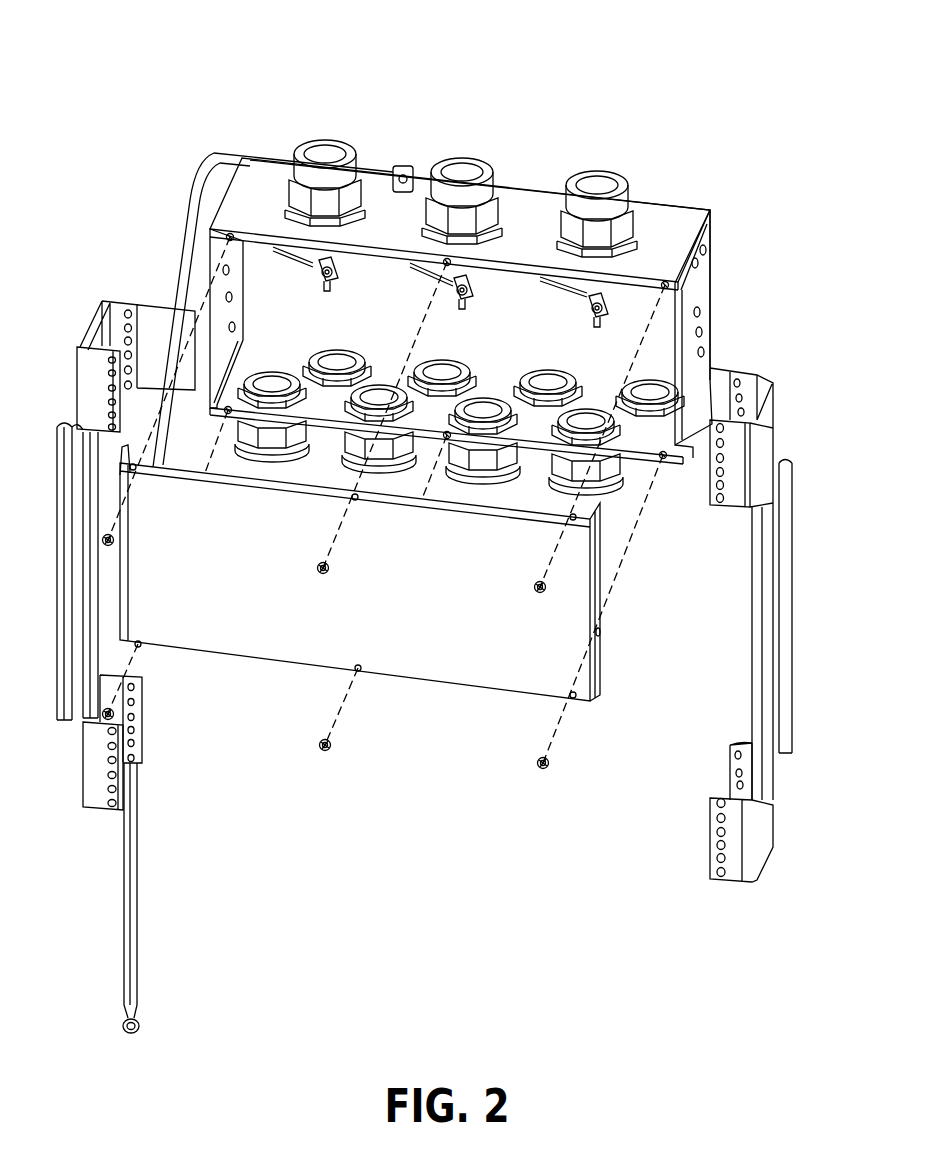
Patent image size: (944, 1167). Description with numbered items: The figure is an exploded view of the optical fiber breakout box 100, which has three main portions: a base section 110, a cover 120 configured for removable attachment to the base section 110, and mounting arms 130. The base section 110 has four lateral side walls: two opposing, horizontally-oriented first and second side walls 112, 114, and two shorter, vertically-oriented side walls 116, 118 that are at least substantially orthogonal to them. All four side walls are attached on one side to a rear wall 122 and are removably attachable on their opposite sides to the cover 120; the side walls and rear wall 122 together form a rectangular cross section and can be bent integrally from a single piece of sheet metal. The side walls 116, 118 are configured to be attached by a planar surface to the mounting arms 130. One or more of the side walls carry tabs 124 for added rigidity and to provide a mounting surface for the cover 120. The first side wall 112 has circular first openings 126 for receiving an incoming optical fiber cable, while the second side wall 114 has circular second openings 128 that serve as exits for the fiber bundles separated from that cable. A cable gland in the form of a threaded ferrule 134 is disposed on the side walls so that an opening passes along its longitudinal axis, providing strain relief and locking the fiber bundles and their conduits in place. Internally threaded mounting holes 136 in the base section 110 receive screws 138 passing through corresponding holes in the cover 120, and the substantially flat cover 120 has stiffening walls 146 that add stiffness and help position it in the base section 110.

The breakout box 100 is at (236, 48).
The base section 110 is at (728, 172).
The first side wall 112 is at (654, 210).
The second side wall 114 is at (650, 440).
The side wall 116 is at (703, 262).
The side wall 118 is at (228, 290).
The cover 120 is at (252, 679).
The rear wall 122 is at (664, 334).
The tab 124 is at (257, 240).
The first opening 126 is at (327, 157).
The second opening 128 is at (374, 390).
The mounting arm 130 is at (163, 748).
The threaded ferrule 134 is at (456, 208).
The internally threaded mounting hole 136 is at (665, 287).
The screw 138 is at (535, 589).
The stiffening wall 146 is at (601, 655).